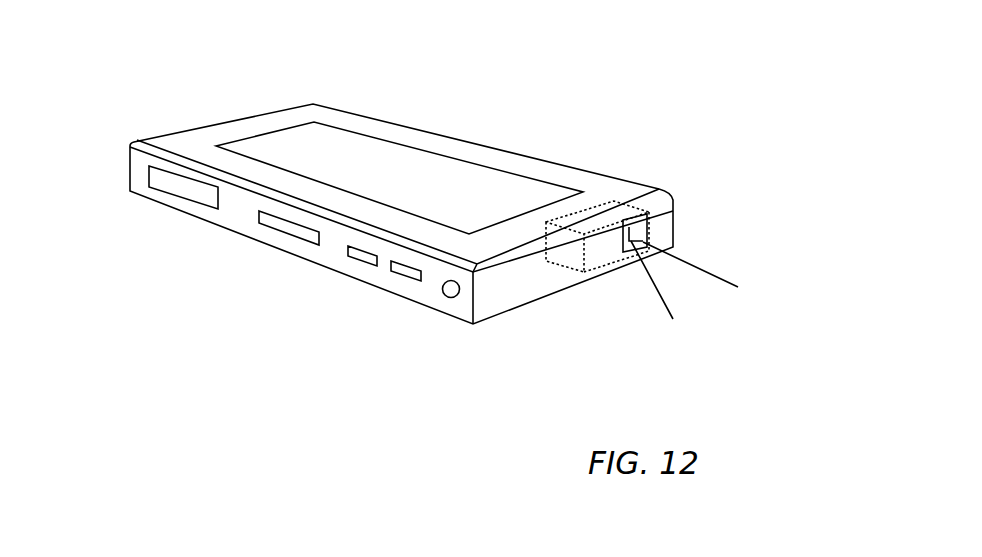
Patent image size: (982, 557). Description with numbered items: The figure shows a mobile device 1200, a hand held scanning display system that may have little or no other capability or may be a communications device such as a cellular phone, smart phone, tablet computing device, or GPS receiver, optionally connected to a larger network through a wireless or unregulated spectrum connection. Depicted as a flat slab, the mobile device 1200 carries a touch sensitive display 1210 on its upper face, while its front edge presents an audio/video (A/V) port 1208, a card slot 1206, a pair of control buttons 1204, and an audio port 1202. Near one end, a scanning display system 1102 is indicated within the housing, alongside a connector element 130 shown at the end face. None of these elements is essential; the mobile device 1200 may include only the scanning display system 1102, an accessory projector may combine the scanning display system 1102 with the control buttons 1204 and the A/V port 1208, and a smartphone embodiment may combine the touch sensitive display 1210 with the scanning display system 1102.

The mobile device 1200 is at (698, 58).
The touch sensitive display 1210 is at (413, 166).
The audio/video (A/V) port 1208 is at (168, 187).
The card slot 1206 is at (277, 226).
The control buttons 1204 is at (357, 263).
The audio port 1202 is at (447, 299).
The scanning display system 1102 is at (613, 203).
The connector 130 is at (628, 232).